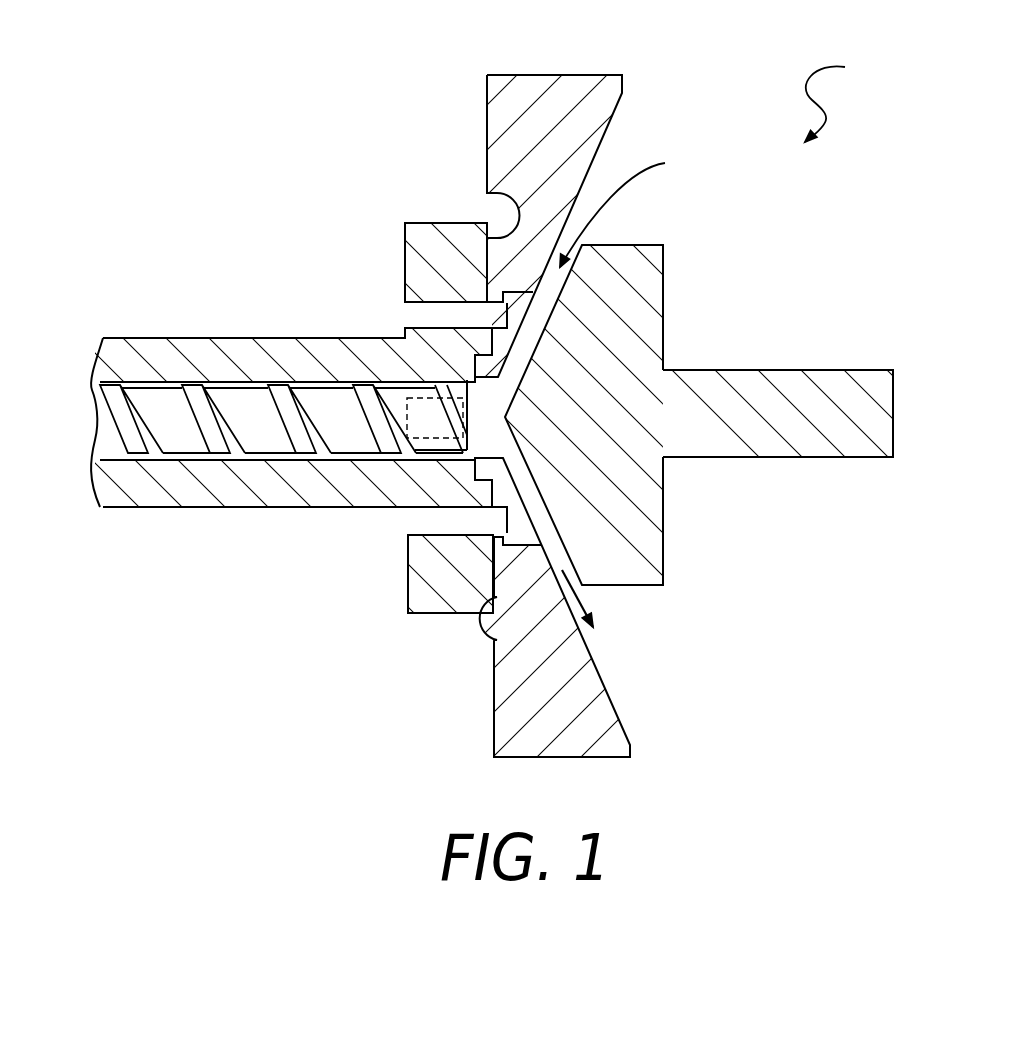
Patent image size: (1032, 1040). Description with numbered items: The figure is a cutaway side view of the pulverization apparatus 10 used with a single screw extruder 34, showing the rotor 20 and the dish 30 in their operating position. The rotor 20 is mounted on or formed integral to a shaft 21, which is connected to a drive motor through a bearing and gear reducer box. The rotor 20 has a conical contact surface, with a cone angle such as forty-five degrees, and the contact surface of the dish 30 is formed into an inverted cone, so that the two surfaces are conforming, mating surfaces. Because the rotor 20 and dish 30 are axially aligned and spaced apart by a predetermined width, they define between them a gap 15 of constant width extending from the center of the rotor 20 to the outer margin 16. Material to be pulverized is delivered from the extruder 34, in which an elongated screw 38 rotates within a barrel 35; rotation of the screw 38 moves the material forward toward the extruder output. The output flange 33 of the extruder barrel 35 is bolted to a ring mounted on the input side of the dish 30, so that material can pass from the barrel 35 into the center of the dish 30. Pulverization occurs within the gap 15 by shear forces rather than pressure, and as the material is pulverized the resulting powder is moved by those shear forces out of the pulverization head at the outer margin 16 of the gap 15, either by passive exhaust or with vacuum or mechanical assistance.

The pulverization apparatus 10 is at (839, 94).
The gap 15 is at (626, 205).
The outer margin 16 is at (575, 585).
The rotor 20 is at (645, 283).
The shaft 21 is at (782, 368).
The dish 30 is at (607, 93).
The output flange 33 is at (462, 233).
The screw extruder 34 is at (135, 338).
The barrel 35 is at (240, 353).
The screw 38 is at (103, 442).